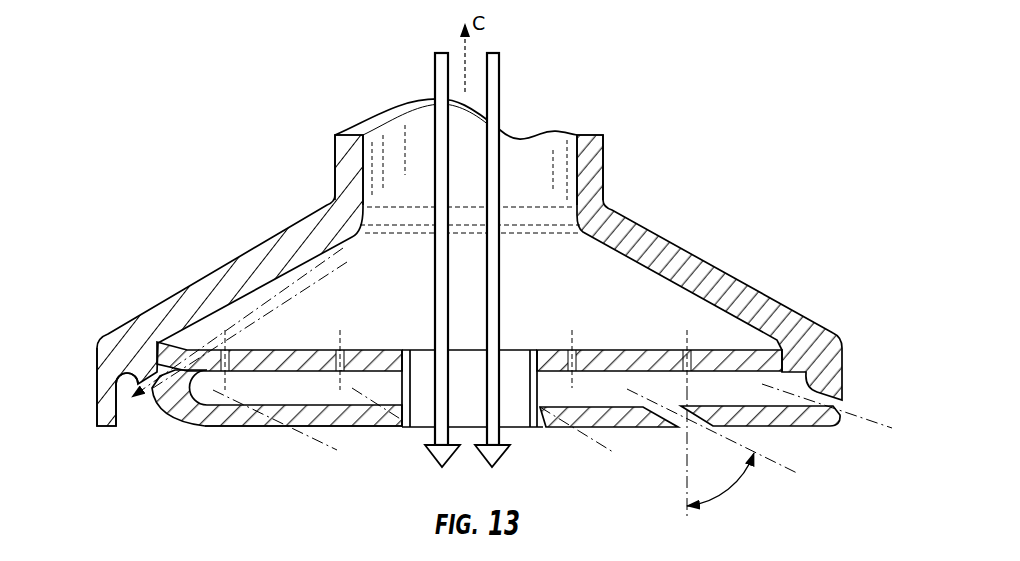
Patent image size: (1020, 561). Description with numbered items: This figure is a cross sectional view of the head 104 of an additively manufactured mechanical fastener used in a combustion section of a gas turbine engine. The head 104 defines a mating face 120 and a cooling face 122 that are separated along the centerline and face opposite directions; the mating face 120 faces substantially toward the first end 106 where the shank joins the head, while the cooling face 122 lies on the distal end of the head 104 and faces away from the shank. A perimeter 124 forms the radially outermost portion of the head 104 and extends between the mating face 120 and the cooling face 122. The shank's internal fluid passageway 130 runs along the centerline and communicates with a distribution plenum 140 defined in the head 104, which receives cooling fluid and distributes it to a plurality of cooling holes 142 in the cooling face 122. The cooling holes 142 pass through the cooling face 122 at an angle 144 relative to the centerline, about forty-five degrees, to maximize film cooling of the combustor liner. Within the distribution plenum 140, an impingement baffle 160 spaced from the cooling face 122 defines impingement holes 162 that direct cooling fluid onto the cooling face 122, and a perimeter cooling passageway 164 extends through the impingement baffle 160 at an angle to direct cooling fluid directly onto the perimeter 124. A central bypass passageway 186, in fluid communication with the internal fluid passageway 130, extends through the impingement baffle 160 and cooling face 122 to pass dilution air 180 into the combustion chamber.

The head 104 is at (84, 301).
The first end 106 is at (326, 200).
The mating face 120 is at (198, 282).
The cooling face 122 is at (361, 432).
The perimeter 124 is at (93, 386).
The internal fluid passageway 130 is at (540, 156).
The distribution plenum 140 is at (566, 306).
The cooling holes 142 is at (261, 420).
The angle 144 is at (733, 493).
The impingement baffle 160 is at (735, 357).
The impingement holes 162 is at (690, 360).
The perimeter cooling passageway 164 is at (160, 388).
The dilution air 180 is at (502, 75).
The central bypass passageway 186 is at (520, 392).